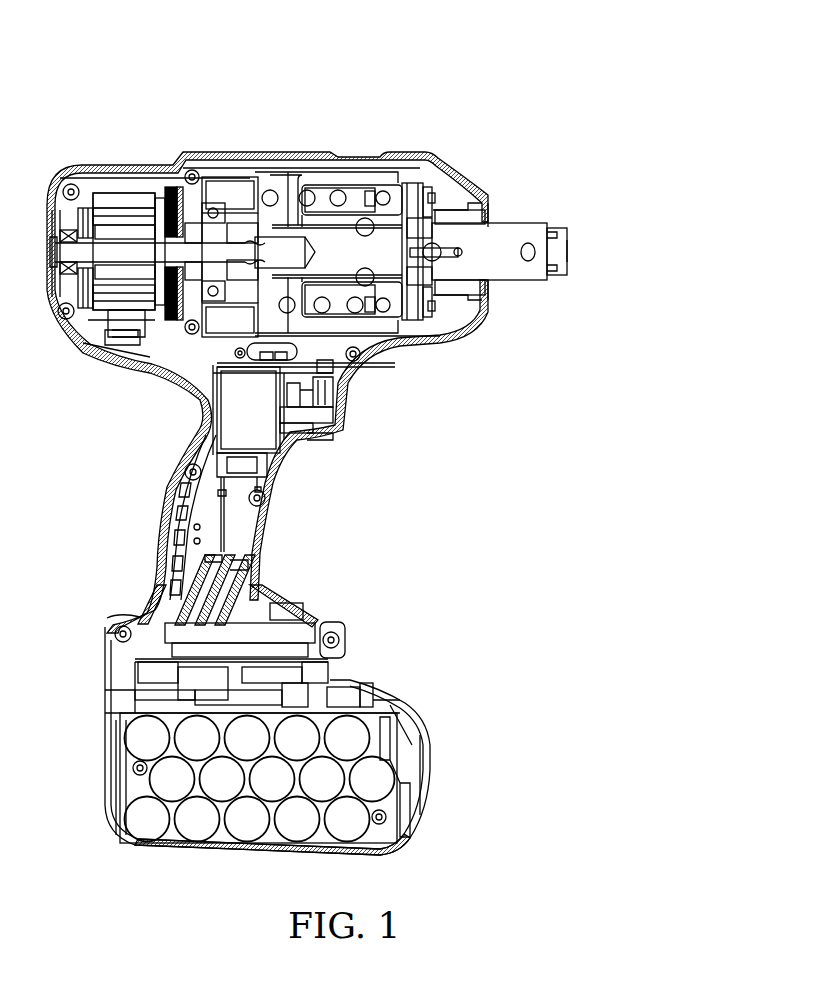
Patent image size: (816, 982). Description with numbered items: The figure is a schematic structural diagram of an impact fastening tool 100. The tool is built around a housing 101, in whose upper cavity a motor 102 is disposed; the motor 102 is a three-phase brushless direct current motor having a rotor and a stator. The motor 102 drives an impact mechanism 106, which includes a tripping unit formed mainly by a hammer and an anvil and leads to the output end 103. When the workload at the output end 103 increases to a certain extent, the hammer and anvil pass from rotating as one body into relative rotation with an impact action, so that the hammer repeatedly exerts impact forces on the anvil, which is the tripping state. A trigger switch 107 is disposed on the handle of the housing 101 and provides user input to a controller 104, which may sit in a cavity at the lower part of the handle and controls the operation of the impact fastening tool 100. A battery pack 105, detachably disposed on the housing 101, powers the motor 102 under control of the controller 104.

The impact fastening tool 100 is at (82, 45).
The housing 101 is at (292, 152).
The motor 102 is at (125, 217).
The output end 103 is at (497, 247).
The controller 104 is at (267, 590).
The battery pack 105 is at (273, 783).
The impact mechanism 106 is at (393, 197).
The trigger switch 107 is at (327, 397).